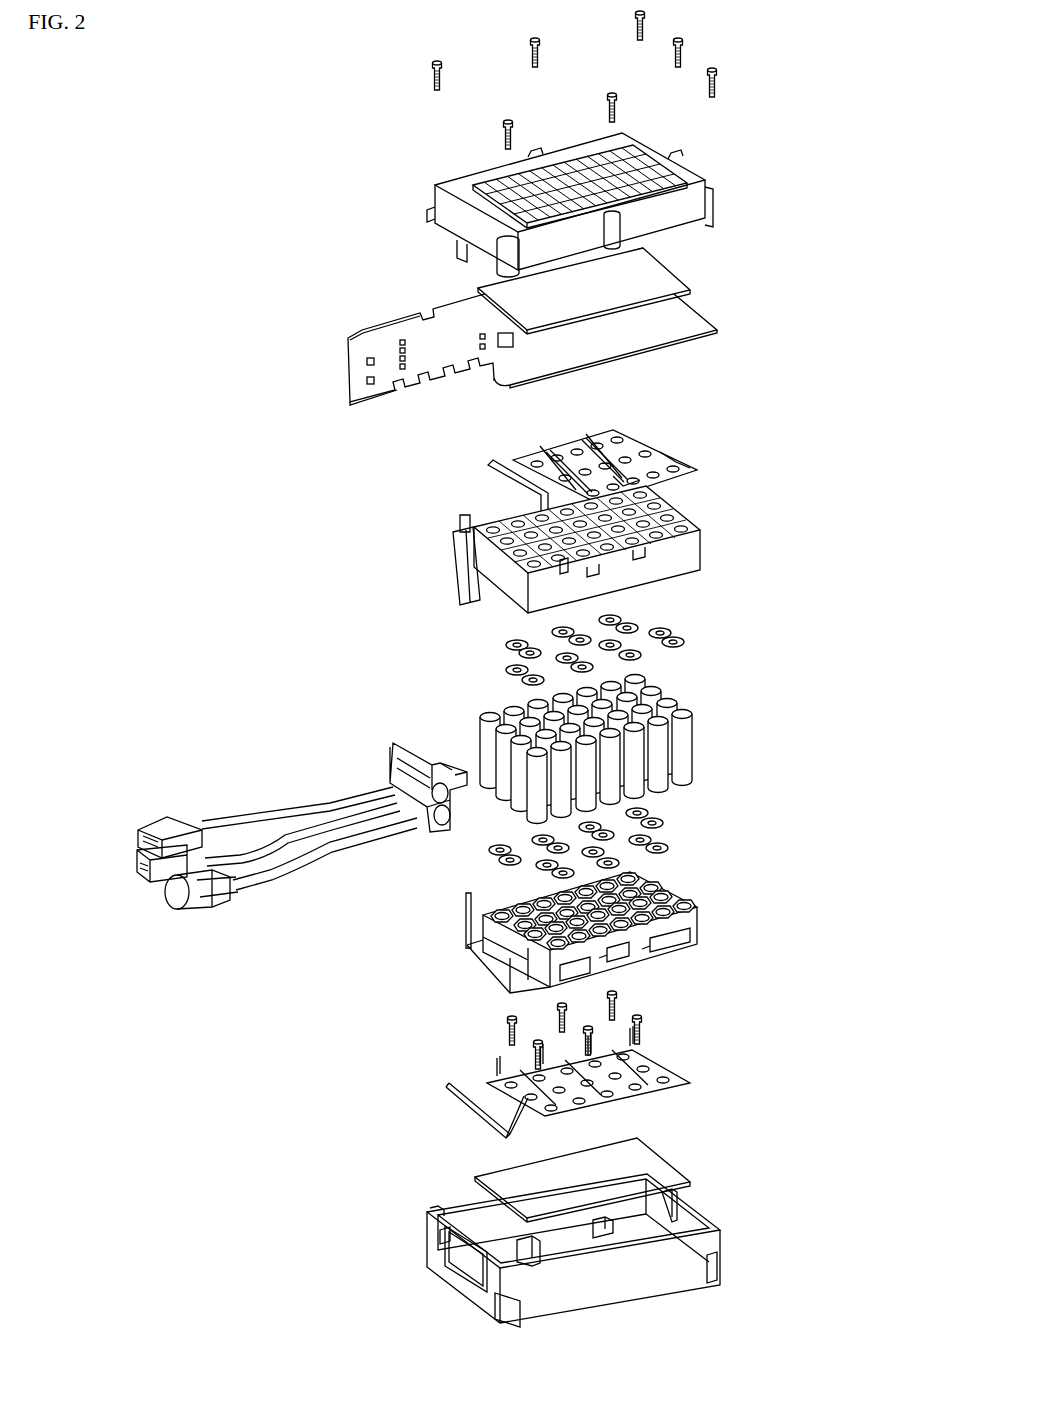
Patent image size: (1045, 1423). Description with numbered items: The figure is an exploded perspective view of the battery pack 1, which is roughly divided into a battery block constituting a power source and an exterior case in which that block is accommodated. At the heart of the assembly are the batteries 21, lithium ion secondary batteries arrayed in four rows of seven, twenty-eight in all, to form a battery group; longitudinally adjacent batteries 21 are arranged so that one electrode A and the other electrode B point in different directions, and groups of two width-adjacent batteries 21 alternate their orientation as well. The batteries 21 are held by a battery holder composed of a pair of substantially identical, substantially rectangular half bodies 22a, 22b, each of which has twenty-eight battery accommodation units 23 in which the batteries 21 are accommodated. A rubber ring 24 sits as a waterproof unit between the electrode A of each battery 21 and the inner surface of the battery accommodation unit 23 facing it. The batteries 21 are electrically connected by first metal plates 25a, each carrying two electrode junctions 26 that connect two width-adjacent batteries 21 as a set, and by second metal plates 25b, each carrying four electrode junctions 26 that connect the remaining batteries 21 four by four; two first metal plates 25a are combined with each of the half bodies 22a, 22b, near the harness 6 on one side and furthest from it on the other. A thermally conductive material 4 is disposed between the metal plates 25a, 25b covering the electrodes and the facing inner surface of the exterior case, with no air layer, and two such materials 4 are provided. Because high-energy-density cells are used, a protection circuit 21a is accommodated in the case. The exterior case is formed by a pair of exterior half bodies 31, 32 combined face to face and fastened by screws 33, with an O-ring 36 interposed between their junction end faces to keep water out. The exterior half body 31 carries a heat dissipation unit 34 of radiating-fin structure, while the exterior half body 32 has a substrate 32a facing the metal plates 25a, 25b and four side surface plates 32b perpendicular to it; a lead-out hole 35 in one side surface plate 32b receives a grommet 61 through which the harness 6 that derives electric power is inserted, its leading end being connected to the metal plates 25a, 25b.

The battery pack 1 is at (172, 163).
The screw 33 is at (714, 68).
The heat dissipation unit 34 is at (512, 178).
The exterior half body 31 is at (594, 195).
The thermally conductive material 4 is at (650, 272).
The O-ring 36 is at (515, 326).
The protection circuit 21a is at (357, 350).
The electrode junction 26 is at (632, 433).
The second metal plate 25b is at (690, 455).
The first metal plate 25a is at (515, 465).
The battery accommodation unit 23 is at (672, 540).
The half body 22a is at (690, 558).
The half body 22b is at (690, 925).
The rubber ring 24 is at (690, 642).
The battery 21 is at (690, 757).
The electrode A is at (500, 722).
The electrode B is at (515, 715).
The harness 6 is at (287, 858).
The grommet 61 is at (435, 835).
The exterior half body 32 is at (536, 1257).
The substrate 32a is at (515, 1262).
The side surface plate 32b is at (430, 1228).
The lead-out hole 35 is at (465, 1280).